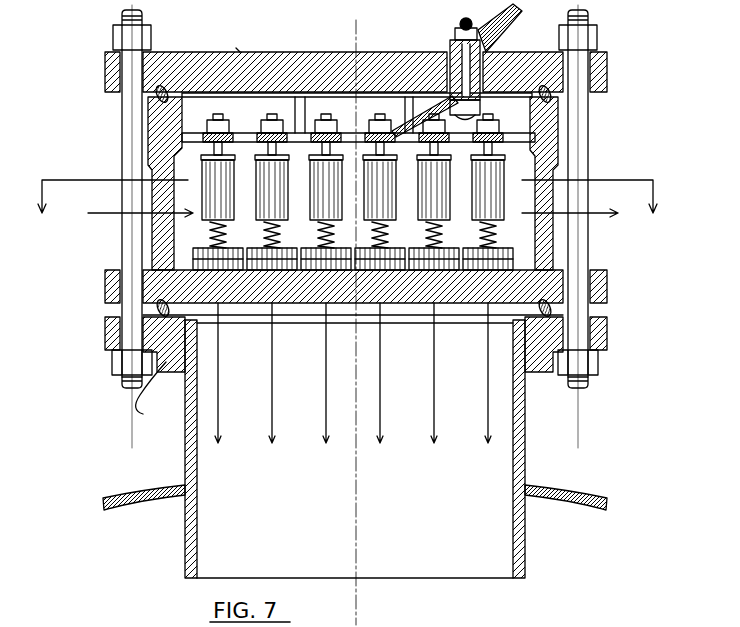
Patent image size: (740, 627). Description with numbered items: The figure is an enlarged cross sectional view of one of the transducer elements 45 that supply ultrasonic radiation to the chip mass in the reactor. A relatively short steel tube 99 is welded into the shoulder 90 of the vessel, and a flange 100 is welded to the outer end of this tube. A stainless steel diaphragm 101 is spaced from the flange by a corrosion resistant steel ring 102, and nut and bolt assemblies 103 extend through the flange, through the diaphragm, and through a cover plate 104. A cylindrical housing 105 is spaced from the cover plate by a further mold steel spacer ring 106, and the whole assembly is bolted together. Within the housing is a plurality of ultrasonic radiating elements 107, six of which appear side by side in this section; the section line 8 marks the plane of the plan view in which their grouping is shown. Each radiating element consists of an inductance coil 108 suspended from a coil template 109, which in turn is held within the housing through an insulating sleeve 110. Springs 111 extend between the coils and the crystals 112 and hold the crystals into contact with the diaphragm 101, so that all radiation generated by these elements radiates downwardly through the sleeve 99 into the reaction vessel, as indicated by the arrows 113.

The transducer element 45 is at (236, 37).
The cover plate 104 is at (290, 67).
The mold steel spacer ring 106 is at (157, 95).
The nut and bolt assembly 103 is at (127, 133).
The insulating sleeve 110 is at (186, 109).
The coil template 109 is at (250, 130).
The ultrasonic radiating element 107 is at (352, 190).
The cylindrical housing 105 is at (543, 128).
The inductance coil 108 is at (494, 181).
The crystal 112 is at (193, 263).
The stainless steel diaphragm 101 is at (118, 297).
The corrosion resistant steel ring 102 is at (143, 317).
The flange 100 is at (156, 394).
The spring 111 is at (490, 243).
The steel tube 99 is at (525, 413).
The shoulder 90 is at (525, 485).
The arrows 113 is at (353, 373).
The section line 8- 8 is at (347, 213).